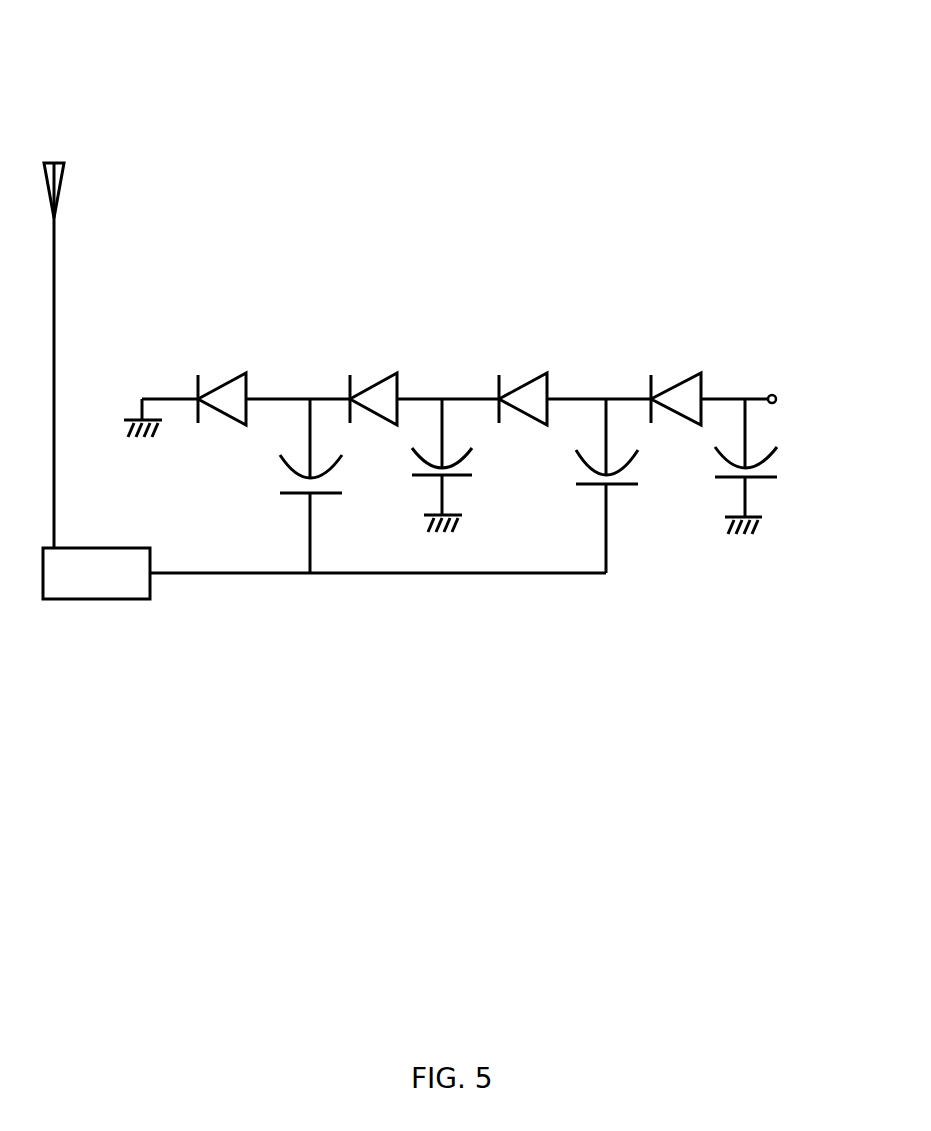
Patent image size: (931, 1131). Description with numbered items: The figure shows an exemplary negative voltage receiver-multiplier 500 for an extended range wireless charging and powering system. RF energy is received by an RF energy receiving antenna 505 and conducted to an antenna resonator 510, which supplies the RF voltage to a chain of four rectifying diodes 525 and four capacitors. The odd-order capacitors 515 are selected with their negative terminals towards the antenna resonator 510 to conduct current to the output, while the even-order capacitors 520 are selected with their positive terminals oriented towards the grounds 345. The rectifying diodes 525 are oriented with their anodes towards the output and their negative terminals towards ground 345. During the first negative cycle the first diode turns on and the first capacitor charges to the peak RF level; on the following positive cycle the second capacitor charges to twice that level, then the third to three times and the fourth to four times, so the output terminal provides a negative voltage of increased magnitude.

The negative voltage receiver-multiplier 500 is at (112, 80).
The RF energy receiving antenna 505 is at (76, 182).
The antenna resonator 510 is at (324, 561).
The odd-order capacitors 515 is at (462, 486).
The even-order capacitors 520 is at (621, 463).
The rectifying diodes 525 is at (365, 370).
The grounds 345 is at (142, 380).